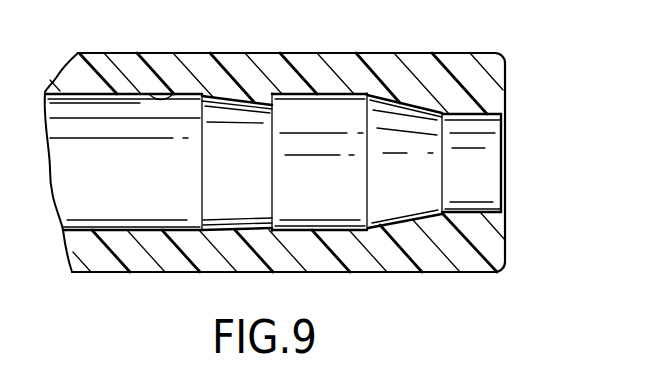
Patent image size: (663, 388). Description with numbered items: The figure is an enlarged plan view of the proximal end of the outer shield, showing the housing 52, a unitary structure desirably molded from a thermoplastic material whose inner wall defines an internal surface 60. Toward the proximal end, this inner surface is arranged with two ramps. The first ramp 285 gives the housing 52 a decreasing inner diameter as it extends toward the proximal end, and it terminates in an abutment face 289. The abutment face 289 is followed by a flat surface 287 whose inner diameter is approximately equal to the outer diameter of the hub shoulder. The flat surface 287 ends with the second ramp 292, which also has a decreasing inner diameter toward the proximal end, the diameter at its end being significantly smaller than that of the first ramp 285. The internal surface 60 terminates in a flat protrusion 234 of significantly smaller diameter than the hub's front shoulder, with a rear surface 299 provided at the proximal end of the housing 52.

The housing 52 is at (163, 58).
The internal surface 60 is at (187, 90).
The flat protrusion 234 is at (492, 93).
The ramp 285 is at (250, 88).
The flat surface 287 is at (350, 93).
The abutment face 289 is at (300, 84).
The ramp 292 is at (413, 92).
The rear surface 299 is at (502, 238).